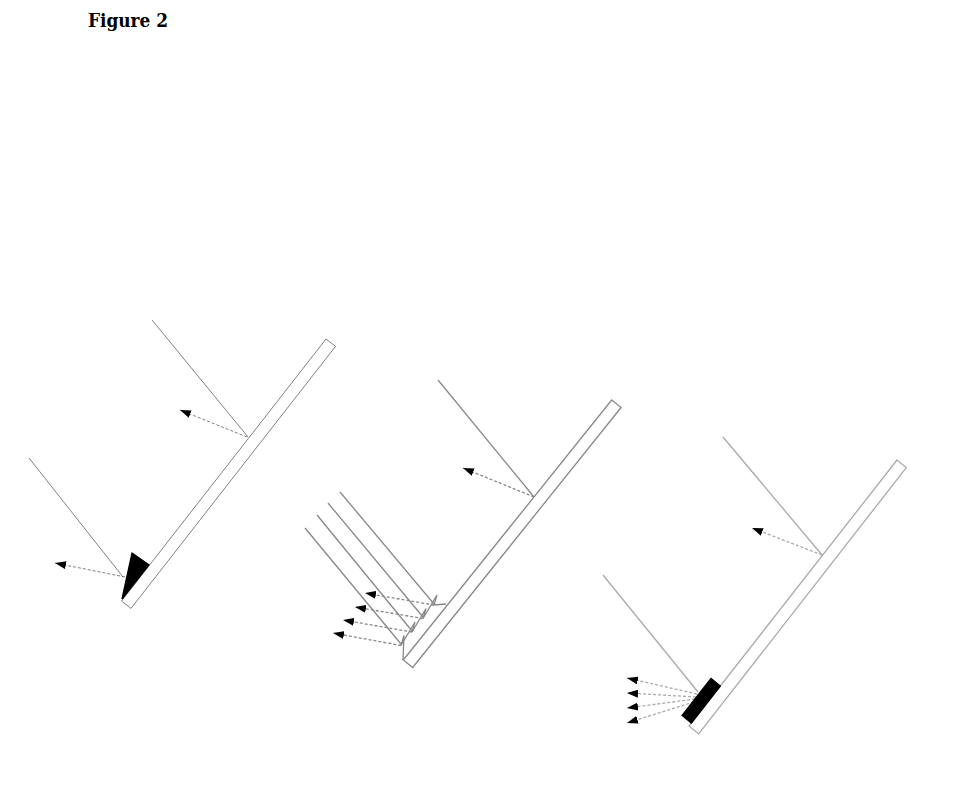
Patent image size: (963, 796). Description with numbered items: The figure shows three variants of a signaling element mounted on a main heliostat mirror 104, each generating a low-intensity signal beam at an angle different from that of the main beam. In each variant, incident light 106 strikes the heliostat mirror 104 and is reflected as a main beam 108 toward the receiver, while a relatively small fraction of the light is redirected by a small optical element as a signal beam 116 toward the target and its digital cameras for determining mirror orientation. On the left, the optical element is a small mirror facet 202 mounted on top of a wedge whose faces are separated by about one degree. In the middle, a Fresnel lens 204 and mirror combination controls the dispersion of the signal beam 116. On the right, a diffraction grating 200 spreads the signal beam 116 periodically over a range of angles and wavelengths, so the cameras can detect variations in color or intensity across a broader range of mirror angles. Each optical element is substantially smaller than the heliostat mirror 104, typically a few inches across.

The heliostat mirror 104 is at (328, 337).
The incident light 106 is at (192, 352).
The main beam 108 is at (213, 437).
The signal beam 116 is at (82, 577).
The mirror facet 202 is at (118, 600).
The Fresnel lens 204 is at (403, 662).
The diffraction grating 200 is at (690, 717).